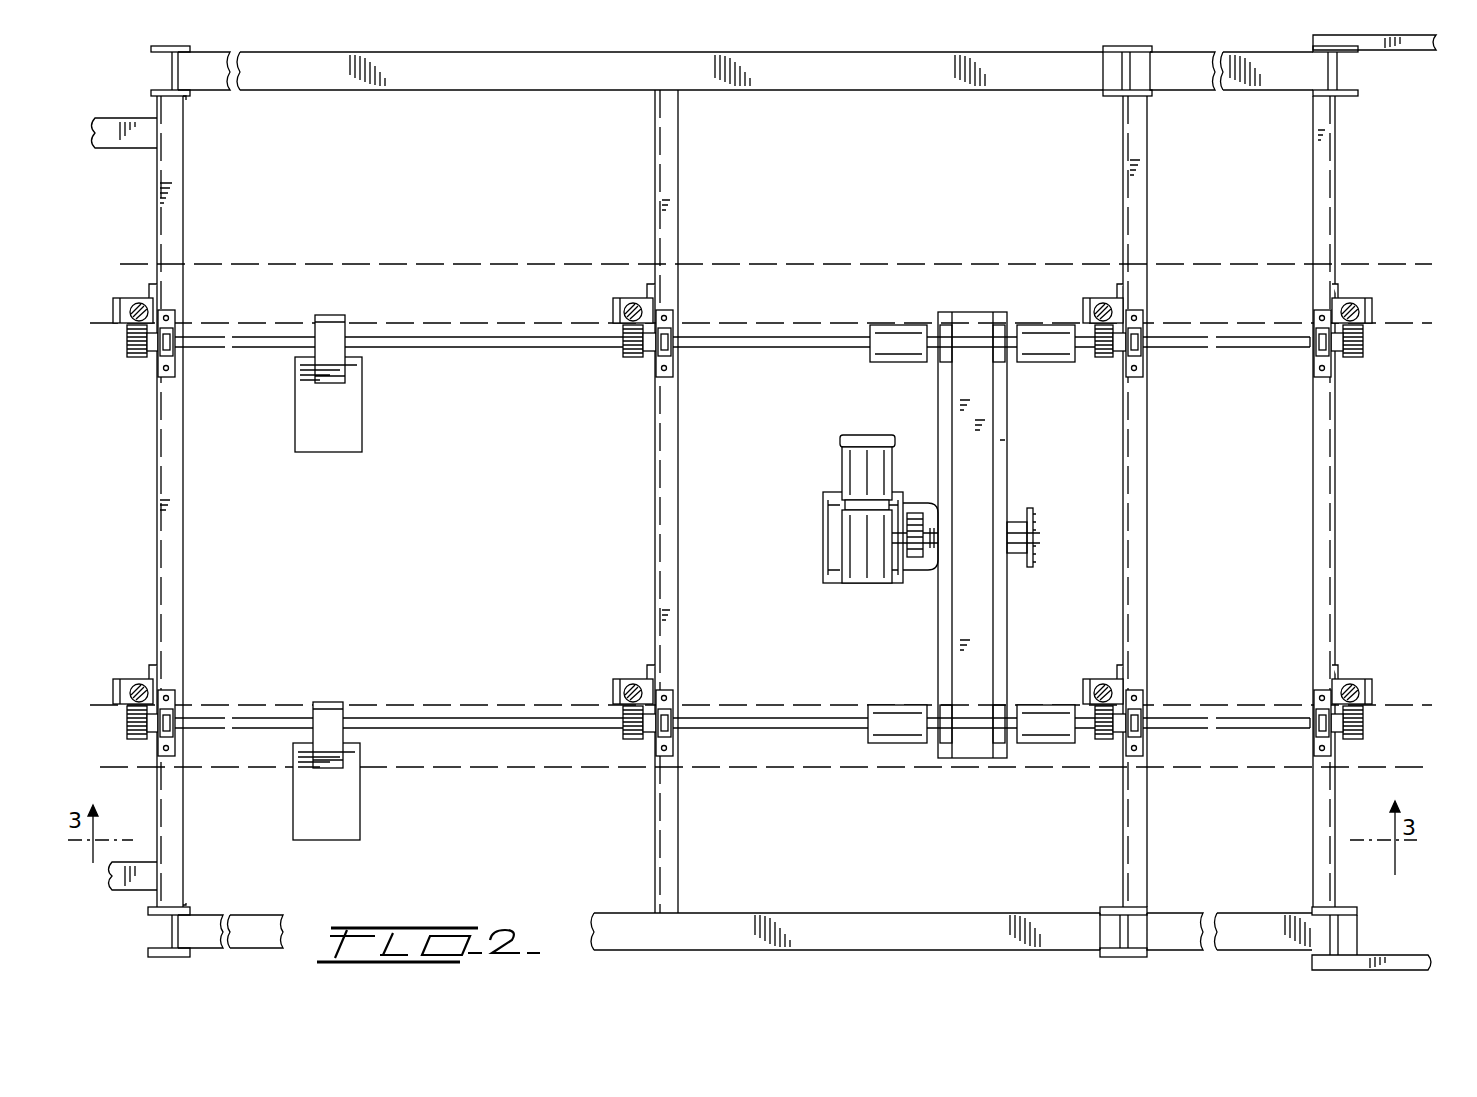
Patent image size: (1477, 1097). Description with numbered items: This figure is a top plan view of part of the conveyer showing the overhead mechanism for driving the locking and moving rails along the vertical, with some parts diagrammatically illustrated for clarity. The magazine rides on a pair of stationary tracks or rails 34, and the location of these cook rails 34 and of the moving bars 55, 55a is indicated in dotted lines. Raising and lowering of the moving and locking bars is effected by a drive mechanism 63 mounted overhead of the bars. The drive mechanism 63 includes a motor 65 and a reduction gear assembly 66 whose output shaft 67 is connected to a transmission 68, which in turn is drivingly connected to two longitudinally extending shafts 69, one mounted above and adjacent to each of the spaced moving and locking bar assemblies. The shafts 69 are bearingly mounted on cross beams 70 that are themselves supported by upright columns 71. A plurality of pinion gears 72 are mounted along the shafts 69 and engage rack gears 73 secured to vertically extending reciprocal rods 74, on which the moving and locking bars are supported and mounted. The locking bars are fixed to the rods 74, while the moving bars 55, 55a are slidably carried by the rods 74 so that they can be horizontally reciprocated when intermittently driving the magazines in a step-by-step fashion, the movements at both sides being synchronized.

The stationary tracks or rails 34 is at (883, 767).
The moving bar 55 is at (1393, 706).
The moving bar 55a is at (1405, 325).
The drive mechanism 63 is at (818, 540).
The motor 65 is at (855, 470).
The reduction gear assembly 66 is at (868, 572).
The output shaft 67 is at (907, 515).
The transmission 68 is at (978, 442).
The longitudinally extending shafts 69 is at (782, 348).
The cross beams 70 is at (177, 513).
The upright columns 71 is at (181, 98).
The pinion gears 72 is at (137, 358).
The rack gears 73 is at (131, 323).
The reciprocal rods 74 is at (136, 303).